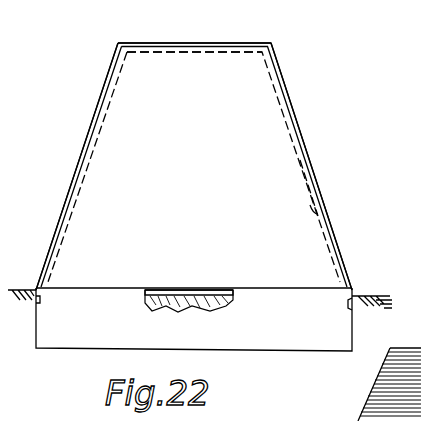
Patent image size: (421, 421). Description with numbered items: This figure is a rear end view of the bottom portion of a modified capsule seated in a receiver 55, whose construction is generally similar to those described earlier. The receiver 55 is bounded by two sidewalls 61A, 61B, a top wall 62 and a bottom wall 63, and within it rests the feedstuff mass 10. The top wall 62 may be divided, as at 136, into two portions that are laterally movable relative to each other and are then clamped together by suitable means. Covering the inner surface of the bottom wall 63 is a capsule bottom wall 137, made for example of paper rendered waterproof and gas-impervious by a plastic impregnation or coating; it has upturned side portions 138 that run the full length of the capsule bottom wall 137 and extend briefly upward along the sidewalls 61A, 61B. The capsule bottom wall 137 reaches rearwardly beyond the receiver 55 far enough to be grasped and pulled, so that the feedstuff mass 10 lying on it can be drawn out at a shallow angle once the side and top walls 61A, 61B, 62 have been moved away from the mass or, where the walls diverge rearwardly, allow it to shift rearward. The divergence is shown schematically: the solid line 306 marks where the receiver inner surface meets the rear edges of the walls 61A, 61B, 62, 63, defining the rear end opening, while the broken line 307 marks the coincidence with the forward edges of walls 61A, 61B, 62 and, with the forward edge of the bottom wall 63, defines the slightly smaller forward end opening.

The feedstuff mass 10 is at (203, 167).
The receiver 55 is at (284, 71).
The sidewall 61A is at (89, 118).
The sidewall 61B is at (297, 118).
The top wall 62 is at (216, 42).
The bottom wall 63 is at (178, 307).
The division of the top wall 136 is at (197, 47).
The capsule bottom wall 137 is at (143, 287).
The upturned side portions 138 is at (40, 276).
The solid line 306 is at (304, 178).
The broken line 307 is at (310, 212).